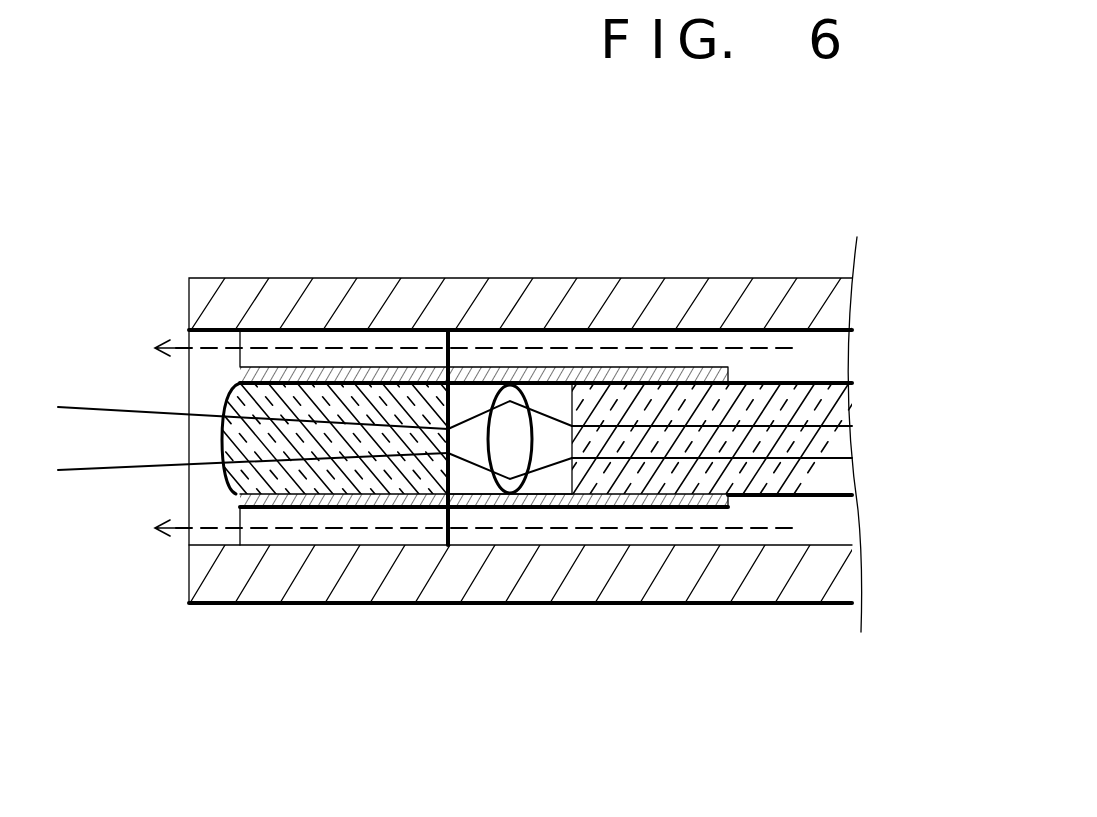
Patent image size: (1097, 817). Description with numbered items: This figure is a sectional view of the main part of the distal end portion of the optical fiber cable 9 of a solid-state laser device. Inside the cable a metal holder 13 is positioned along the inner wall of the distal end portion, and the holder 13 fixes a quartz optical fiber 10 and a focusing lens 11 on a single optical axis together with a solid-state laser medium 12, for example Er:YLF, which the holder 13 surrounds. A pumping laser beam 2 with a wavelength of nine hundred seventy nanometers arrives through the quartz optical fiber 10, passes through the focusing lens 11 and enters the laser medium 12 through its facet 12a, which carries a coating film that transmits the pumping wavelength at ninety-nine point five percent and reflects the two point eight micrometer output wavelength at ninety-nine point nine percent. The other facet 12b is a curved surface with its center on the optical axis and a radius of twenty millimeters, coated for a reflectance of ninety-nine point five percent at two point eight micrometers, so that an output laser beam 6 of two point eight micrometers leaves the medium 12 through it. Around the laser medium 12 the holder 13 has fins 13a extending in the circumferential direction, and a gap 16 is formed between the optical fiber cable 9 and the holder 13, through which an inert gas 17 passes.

The pumping laser beam 2 is at (545, 453).
The output laser beam 6 is at (102, 457).
The optical fiber cable 9 is at (290, 603).
The quartz optical fiber 10 is at (757, 392).
The focusing lens 11 is at (532, 390).
The solid-state laser medium 12 is at (355, 404).
The facet 12a is at (460, 386).
The other facet 12b is at (245, 428).
The metal holder 13 is at (468, 510).
The fins 13a is at (363, 522).
The gap 16 is at (823, 352).
The inert gas 17 is at (158, 340).